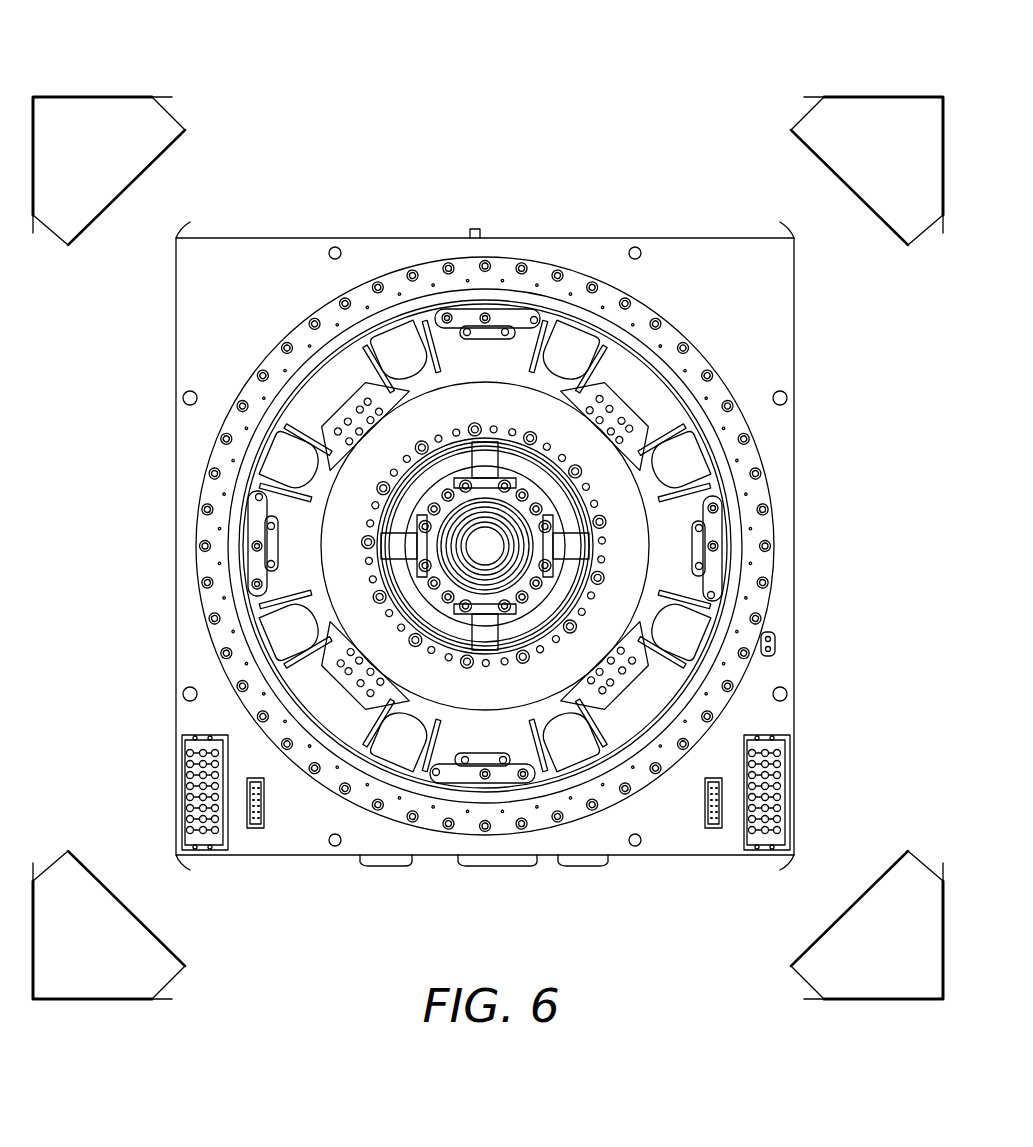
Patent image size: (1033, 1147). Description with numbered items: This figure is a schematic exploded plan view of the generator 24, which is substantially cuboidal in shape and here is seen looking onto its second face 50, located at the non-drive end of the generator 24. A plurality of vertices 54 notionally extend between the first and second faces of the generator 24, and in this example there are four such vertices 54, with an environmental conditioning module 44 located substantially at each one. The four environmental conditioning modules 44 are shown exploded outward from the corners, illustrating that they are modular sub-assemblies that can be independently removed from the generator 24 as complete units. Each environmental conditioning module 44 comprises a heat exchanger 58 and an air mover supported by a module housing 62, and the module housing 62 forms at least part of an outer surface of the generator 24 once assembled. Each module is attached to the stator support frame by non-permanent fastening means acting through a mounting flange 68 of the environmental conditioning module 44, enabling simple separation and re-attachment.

The generator 24 is at (438, 173).
The environmental conditioning module 44 is at (122, 52).
The second face 50 is at (214, 315).
The vertex 54 is at (178, 237).
The heat exchanger 58 is at (114, 205).
The module housing 62 is at (72, 212).
The mounting flange 68 is at (160, 98).